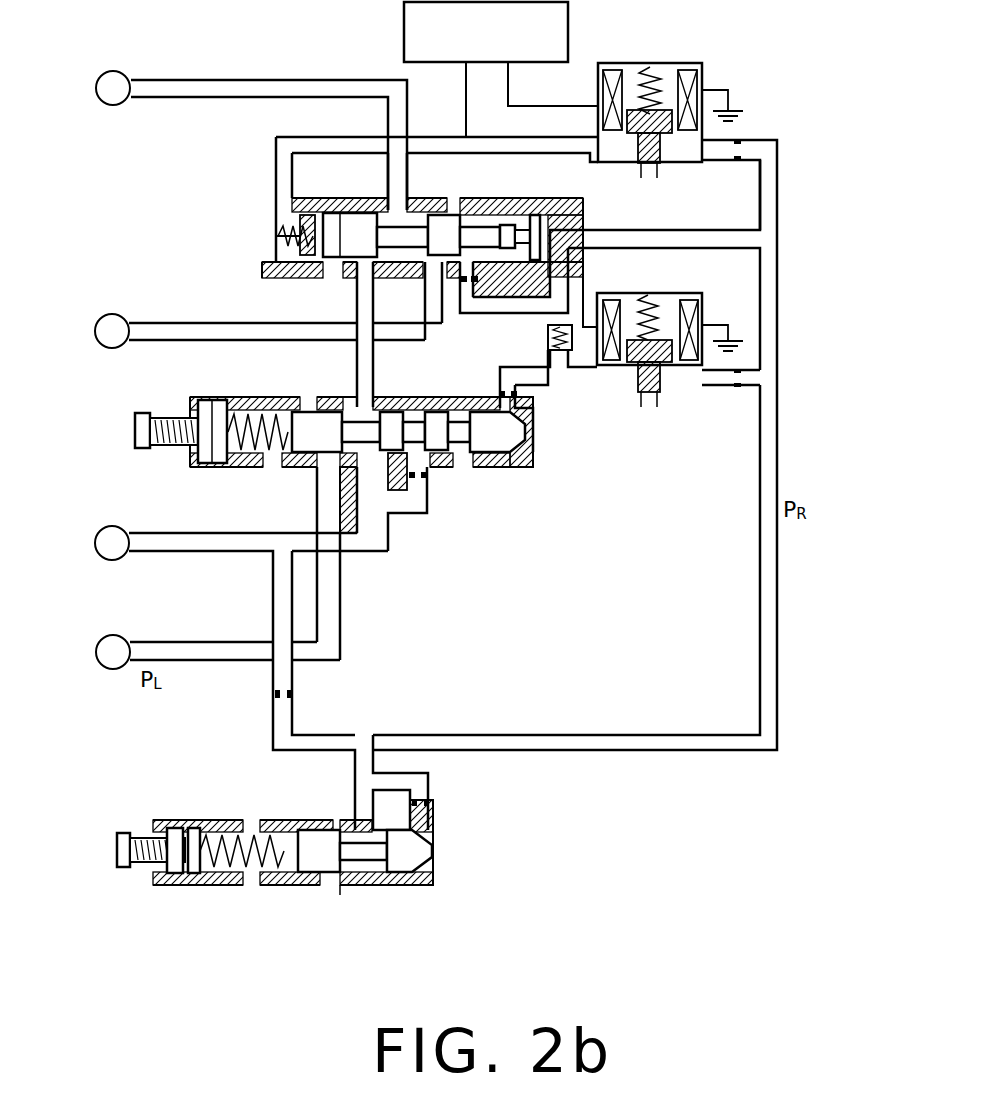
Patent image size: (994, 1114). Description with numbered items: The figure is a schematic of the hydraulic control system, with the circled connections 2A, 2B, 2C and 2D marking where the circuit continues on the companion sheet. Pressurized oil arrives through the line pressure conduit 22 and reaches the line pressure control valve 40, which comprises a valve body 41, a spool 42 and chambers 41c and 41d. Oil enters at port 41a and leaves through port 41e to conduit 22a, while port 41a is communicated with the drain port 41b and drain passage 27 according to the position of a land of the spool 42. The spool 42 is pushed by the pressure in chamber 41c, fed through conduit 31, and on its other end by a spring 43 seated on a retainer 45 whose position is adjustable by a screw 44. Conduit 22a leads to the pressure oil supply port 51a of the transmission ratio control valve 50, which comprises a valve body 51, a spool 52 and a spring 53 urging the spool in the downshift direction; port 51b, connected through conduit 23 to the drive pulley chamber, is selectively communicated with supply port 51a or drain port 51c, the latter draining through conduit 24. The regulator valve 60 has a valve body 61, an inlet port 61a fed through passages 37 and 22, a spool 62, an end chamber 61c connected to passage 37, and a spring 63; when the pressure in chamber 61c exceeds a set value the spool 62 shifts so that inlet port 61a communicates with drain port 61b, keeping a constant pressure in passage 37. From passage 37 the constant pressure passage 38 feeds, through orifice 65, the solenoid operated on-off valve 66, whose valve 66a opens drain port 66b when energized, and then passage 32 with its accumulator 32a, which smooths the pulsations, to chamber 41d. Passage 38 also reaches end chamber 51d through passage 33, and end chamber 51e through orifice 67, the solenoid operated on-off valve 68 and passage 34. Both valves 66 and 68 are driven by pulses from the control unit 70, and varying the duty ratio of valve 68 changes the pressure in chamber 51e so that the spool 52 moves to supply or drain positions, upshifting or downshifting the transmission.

The port 2A is at (113, 88).
The port 2B is at (112, 331).
The port 2C is at (112, 543).
The port 2D is at (113, 652).
The line pressure conduit 22 is at (184, 533).
The conduit 22a is at (355, 312).
The conduit 23 is at (224, 84).
The conduit 24 is at (246, 336).
The drain passage 27 is at (193, 657).
The conduit 31 is at (428, 525).
The passage 32 is at (580, 372).
The accumulator 32a is at (537, 405).
The passage 33 is at (678, 230).
The passage 34 is at (512, 140).
The passage 37 is at (326, 744).
The constant pressure passage 38 is at (761, 574).
The line pressure control valve 40 is at (351, 500).
The valve body 41 is at (470, 406).
The port 41a is at (405, 520).
The drain port 41b is at (325, 470).
The chamber 41c is at (433, 455).
The chamber 41d is at (525, 452).
The port 41e is at (357, 398).
The spool 42 is at (392, 420).
The spring 43 is at (264, 408).
The screw 44 is at (143, 450).
The retainer 45 is at (212, 465).
The transmission ratio control valve 50 is at (395, 279).
The valve body 51 is at (454, 212).
The pressure oil supply port 51a is at (346, 280).
The port 51b is at (392, 210).
The drain port 51c is at (409, 301).
The end chamber 51d is at (490, 292).
The end chamber 51e is at (290, 258).
The spool 52 is at (338, 210).
The spring 53 is at (276, 224).
The regulator valve 60 is at (317, 848).
The valve body 61 is at (217, 881).
The inlet port 61a is at (355, 820).
The drain port 61b is at (342, 896).
The end chamber 61c is at (430, 885).
The spool 62 is at (317, 874).
The spring 63 is at (258, 835).
The orifice 65 is at (737, 390).
The solenoid operated on-off valve 66 is at (671, 354).
The valve 66a is at (668, 380).
The drain port 66b is at (646, 407).
The orifice 67 is at (740, 138).
The solenoid operated on-off valve 68 is at (697, 64).
The control unit 70 is at (570, 40).